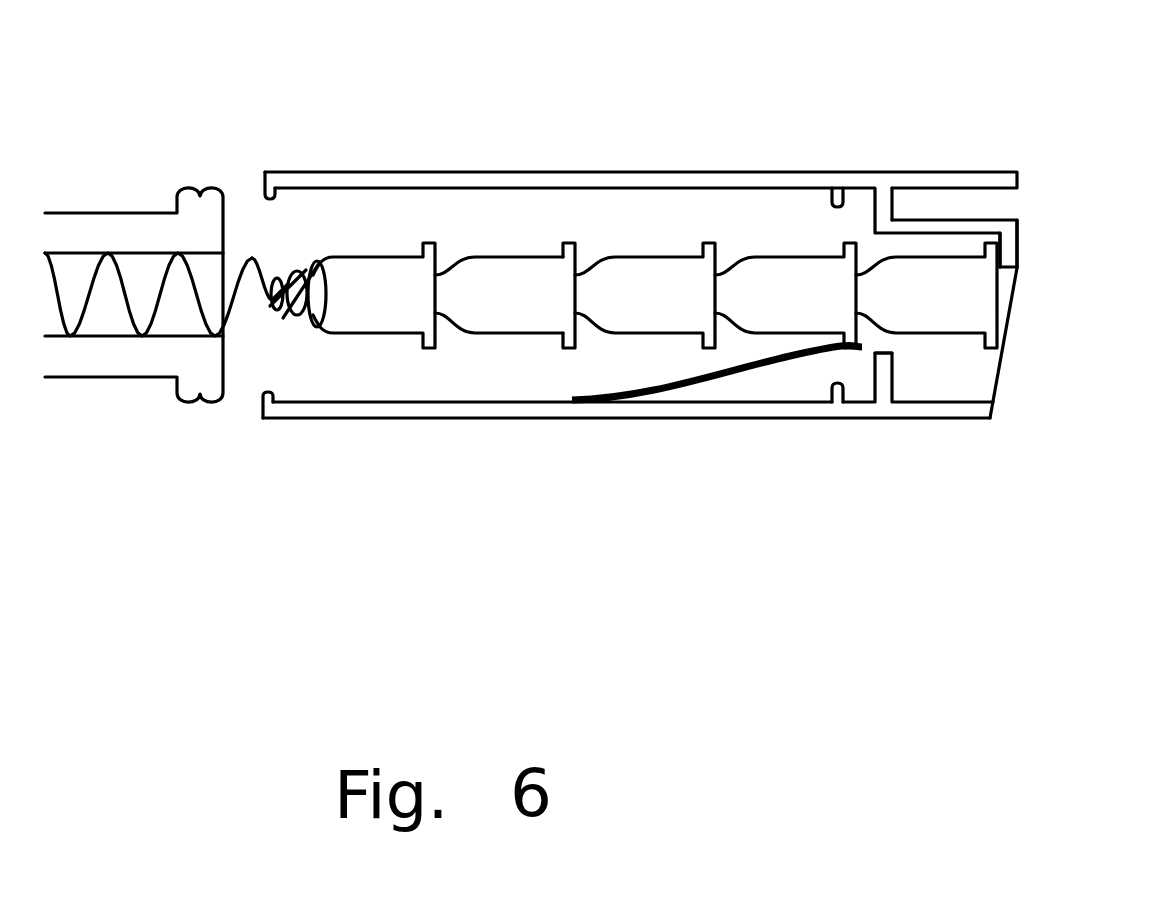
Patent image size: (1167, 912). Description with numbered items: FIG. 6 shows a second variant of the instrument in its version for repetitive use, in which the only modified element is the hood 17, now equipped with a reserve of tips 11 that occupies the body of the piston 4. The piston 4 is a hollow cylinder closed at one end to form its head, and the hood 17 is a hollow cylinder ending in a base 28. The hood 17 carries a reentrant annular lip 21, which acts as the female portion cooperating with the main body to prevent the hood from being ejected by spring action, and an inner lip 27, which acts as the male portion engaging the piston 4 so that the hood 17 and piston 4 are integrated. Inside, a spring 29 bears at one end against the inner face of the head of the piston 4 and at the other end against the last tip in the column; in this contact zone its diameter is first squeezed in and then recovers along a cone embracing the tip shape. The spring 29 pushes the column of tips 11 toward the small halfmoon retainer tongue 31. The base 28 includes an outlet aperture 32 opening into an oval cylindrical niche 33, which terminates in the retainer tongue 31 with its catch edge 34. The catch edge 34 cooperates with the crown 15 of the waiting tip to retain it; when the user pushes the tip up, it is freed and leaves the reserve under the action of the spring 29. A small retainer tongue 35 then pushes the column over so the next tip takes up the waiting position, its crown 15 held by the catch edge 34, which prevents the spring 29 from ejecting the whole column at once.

The piston 4 is at (133, 186).
The tip 11 is at (655, 295).
The crown 15 is at (567, 347).
The hood 17 is at (494, 139).
The reentrant annular lip 21 is at (272, 196).
The inner lip 27 is at (838, 194).
The base 28 is at (900, 207).
The spring 29 is at (264, 268).
The small halfmoon retainer tongue 31 is at (1017, 235).
The outlet aperture 32 is at (868, 347).
The oval cylindrical niche 33 is at (998, 365).
The catch edge 34 is at (1017, 270).
The small retainer tongue 35 is at (668, 393).